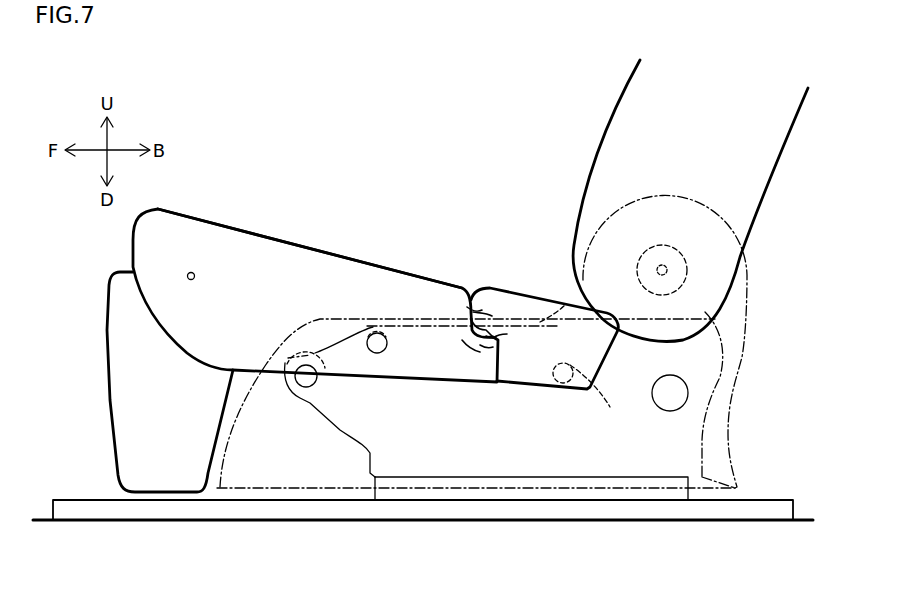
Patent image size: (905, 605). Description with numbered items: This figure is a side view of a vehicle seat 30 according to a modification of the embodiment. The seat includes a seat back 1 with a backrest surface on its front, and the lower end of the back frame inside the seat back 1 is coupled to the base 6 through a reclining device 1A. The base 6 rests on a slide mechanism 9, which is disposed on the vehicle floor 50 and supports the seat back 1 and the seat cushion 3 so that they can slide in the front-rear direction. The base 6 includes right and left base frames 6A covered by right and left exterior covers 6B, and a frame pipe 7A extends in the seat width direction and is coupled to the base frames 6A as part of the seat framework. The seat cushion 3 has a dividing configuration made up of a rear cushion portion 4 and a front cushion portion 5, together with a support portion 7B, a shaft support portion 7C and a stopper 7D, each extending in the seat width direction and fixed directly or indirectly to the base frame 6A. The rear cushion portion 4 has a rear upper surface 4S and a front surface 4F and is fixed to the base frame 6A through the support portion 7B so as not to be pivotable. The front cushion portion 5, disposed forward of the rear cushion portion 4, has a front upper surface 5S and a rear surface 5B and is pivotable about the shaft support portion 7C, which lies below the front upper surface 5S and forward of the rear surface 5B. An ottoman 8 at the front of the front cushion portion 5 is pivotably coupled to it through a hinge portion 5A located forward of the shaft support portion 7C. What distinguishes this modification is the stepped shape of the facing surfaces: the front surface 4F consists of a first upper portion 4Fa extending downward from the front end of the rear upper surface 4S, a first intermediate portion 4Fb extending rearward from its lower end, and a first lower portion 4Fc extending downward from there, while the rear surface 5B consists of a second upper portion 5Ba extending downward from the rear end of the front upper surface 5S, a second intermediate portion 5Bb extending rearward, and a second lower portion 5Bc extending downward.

The seat back 1 is at (690, 113).
The reclining device 1A is at (687, 252).
The seat cushion 3 is at (545, 157).
The rear cushion portion 4 is at (528, 287).
The front surface 4F is at (368, 214).
The first upper portion 4Fa is at (477, 310).
The first intermediate portion 4Fb is at (493, 338).
The first lower portion 4Fc is at (493, 347).
The rear upper surface 4S is at (547, 313).
The front cushion portion 5 is at (333, 238).
The hinge portion 5A is at (190, 272).
The front upper surface 5S is at (268, 228).
The rear surface 5B is at (472, 554).
The second upper portion 5Ba is at (473, 312).
The second intermediate portion 5Bb is at (498, 336).
The second lower portion 5Bc is at (467, 340).
The base 6 is at (711, 341).
The base frame 6A is at (707, 433).
The exterior cover 6B is at (733, 378).
The frame pipe 7A is at (666, 411).
The support portion 7B is at (600, 393).
The shaft support portion 7C is at (372, 353).
The stopper 7D is at (308, 388).
The ottoman 8 is at (143, 386).
The slide mechanism 9 is at (724, 508).
The vehicle seat 30 is at (348, 100).
The vehicle floor 50 is at (105, 520).